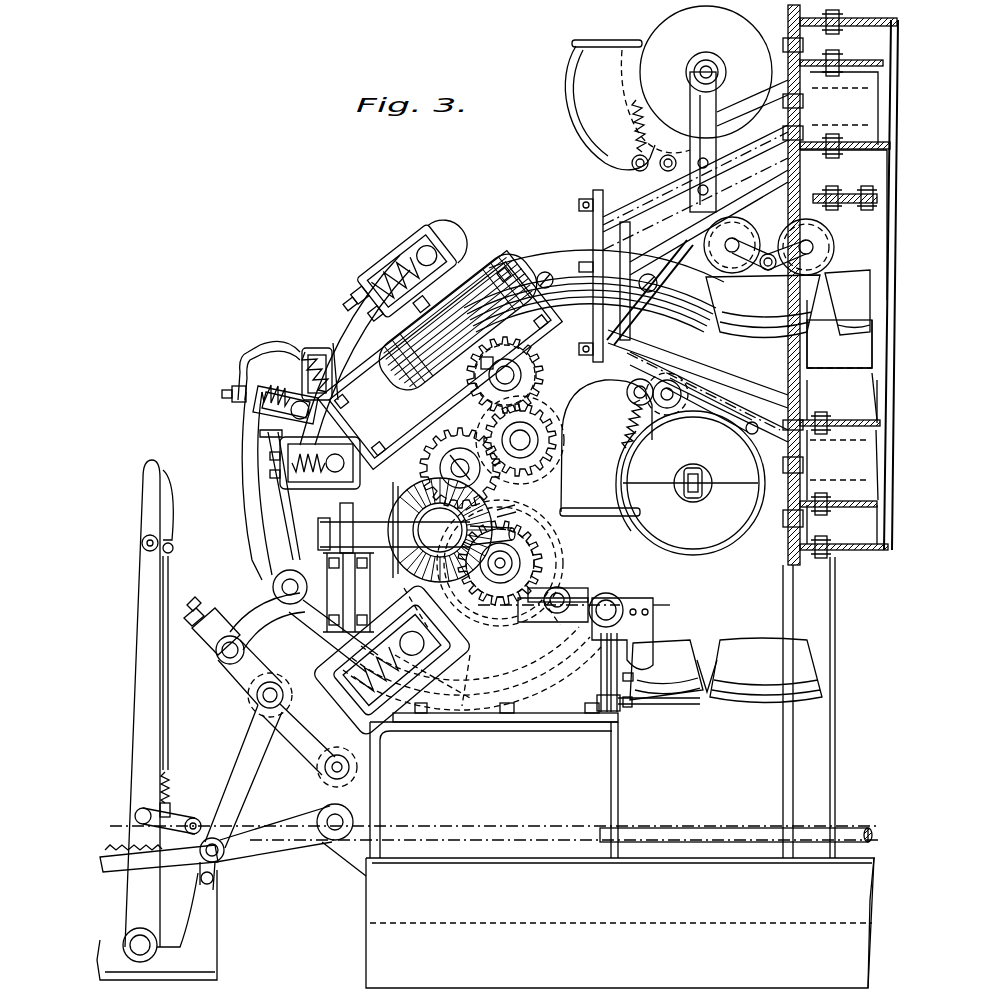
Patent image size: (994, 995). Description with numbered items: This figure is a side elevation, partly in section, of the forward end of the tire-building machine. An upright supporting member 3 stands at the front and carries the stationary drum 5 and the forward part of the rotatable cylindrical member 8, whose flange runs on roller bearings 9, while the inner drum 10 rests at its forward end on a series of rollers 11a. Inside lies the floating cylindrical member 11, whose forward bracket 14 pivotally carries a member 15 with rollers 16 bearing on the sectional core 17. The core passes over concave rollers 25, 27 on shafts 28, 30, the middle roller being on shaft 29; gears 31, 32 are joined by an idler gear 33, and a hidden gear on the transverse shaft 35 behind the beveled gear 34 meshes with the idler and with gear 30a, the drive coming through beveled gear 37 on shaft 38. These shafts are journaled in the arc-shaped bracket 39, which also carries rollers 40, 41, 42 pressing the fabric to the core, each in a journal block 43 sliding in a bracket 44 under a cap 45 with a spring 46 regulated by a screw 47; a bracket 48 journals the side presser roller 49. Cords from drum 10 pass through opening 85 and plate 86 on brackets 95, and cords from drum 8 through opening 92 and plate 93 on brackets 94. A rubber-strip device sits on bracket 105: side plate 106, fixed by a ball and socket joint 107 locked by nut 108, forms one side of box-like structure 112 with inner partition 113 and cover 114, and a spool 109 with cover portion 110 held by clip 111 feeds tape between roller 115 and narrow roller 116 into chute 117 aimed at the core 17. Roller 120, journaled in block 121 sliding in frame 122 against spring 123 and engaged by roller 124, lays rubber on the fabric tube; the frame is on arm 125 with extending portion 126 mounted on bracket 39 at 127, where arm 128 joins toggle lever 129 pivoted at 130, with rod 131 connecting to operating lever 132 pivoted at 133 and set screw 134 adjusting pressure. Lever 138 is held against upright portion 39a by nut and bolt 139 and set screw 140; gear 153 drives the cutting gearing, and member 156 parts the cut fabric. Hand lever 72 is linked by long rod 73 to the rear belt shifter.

The upright supporting member 3 is at (783, 768).
The drum 5 is at (872, 551).
The cylindrical member 8 is at (842, 271).
The roller bearings 9 is at (820, 514).
The drum 10 is at (867, 396).
The floating cylindrical member 11 is at (852, 367).
The rollers 11a is at (810, 448).
The bracket 14 is at (842, 212).
The member 15 is at (770, 250).
The rollers 16 is at (710, 228).
The sectional core 17 is at (750, 486).
The roller 25 is at (516, 355).
The roller 27 is at (532, 548).
The shaft 28 is at (532, 370).
The shaft 29 is at (455, 463).
The shaft 30 is at (525, 545).
The gear 30a is at (550, 553).
The gear 31 is at (522, 378).
The gear 32 is at (522, 475).
The idler gear 33 is at (541, 418).
The beveled gear 34 is at (440, 468).
The shaft 35 is at (430, 560).
The beveled gear 37 is at (398, 570).
The shaft 38 is at (508, 499).
The arc-shaped bracket 39 is at (345, 318).
The upright portion 39a is at (654, 612).
The roller 40 is at (447, 260).
The roller 41 is at (310, 485).
The roller 42 is at (360, 645).
The journal blocks 43 is at (420, 255).
The brackets 44 is at (380, 268).
The caps 45 is at (375, 240).
The spring 46 is at (385, 244).
The screw 47 is at (364, 240).
The bracket 48 is at (392, 356).
The presser roller 49 is at (498, 265).
The hand lever 72 is at (143, 748).
The long rod 73 is at (696, 828).
The opening 85 is at (812, 132).
The plate 86 is at (650, 270).
The opening 92 is at (822, 60).
The plate 93 is at (593, 232).
The brackets 94 is at (620, 210).
The brackets 95 is at (737, 352).
The bracket 105 is at (720, 112).
The side plate 106 is at (627, 108).
The ball and socket joint 107 is at (708, 60).
The nut 108 is at (716, 74).
The spool 109 is at (706, 72).
The cover portion 110 is at (693, 483).
The clip 111 is at (703, 486).
The box-like structure 112 is at (575, 108).
The inner partition 113 is at (626, 80).
The cover 114 is at (600, 36).
The roller 115 is at (634, 165).
The roller 116 is at (668, 150).
The chute 117 is at (708, 405).
The roller 120 is at (320, 344).
The block 121 is at (330, 350).
The frame 122 is at (290, 352).
The spring 123 is at (258, 402).
The roller 124 is at (272, 428).
The arm 125 is at (252, 545).
The extending portion 126 is at (210, 612).
The mounting 127 is at (292, 605).
The arm 128 is at (248, 612).
The toggle lever 129 is at (240, 685).
The pivot 130 is at (350, 765).
The rod 131 is at (252, 760).
The operating lever 132 is at (272, 855).
The pivot 133 is at (347, 818).
The set screw 134 is at (192, 630).
The lever 138 is at (600, 712).
The nut and bolt 139 is at (630, 706).
The set screw 140 is at (662, 692).
The gear 153 is at (577, 594).
The member 156 is at (650, 642).